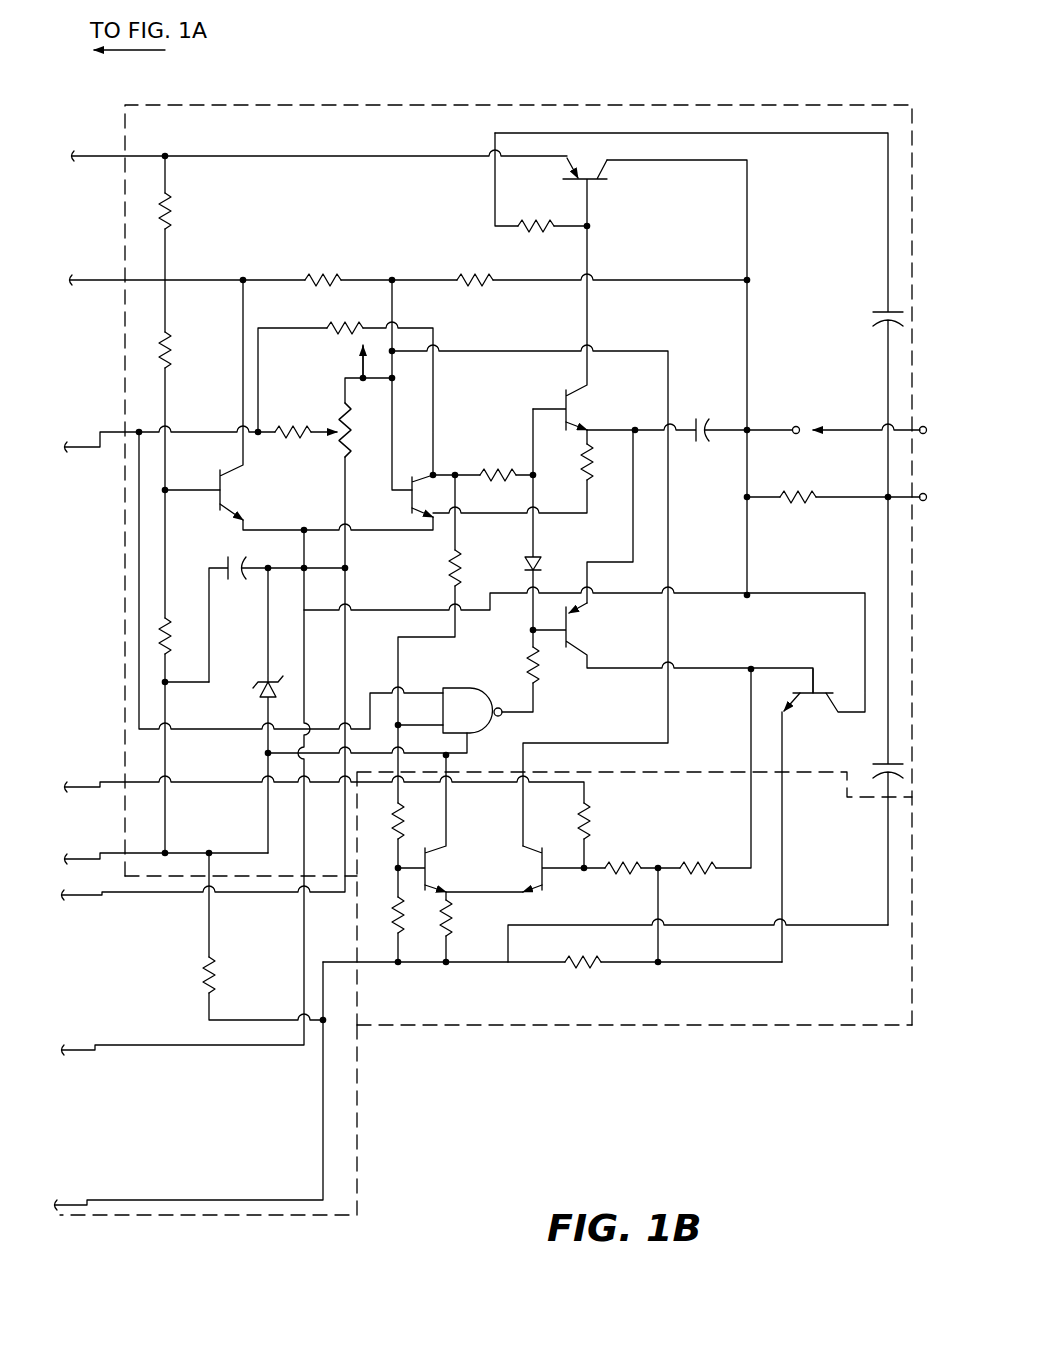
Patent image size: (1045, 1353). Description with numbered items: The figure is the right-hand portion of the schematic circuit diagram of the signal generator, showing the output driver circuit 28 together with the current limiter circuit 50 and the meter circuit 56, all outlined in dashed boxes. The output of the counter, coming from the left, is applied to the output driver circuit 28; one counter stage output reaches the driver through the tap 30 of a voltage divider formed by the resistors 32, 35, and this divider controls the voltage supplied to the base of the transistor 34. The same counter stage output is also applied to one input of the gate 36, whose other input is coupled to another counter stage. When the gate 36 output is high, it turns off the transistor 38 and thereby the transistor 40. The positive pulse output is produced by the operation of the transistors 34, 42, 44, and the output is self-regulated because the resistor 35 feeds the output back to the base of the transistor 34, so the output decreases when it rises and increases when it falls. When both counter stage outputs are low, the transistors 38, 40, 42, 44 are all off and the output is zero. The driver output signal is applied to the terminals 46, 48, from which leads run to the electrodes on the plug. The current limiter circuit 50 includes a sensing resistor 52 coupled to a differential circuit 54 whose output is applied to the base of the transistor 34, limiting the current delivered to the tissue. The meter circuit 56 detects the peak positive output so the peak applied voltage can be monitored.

The output driver circuit 28 is at (229, 101).
The tap 30 is at (332, 429).
The resistor 32 is at (348, 429).
The transistor 34 is at (414, 508).
The resistor 35 is at (487, 278).
The gate 36 is at (495, 698).
The transistor 38 is at (566, 648).
The transistor 40 is at (818, 693).
The transistor 42 is at (562, 405).
The transistor 44 is at (580, 183).
The terminal 46 is at (927, 432).
The terminal 48 is at (927, 496).
The current limiter circuit 50 is at (915, 880).
The sensing resistor 52 is at (588, 963).
The differential circuit 54 is at (504, 831).
The meter circuit 56 is at (162, 982).